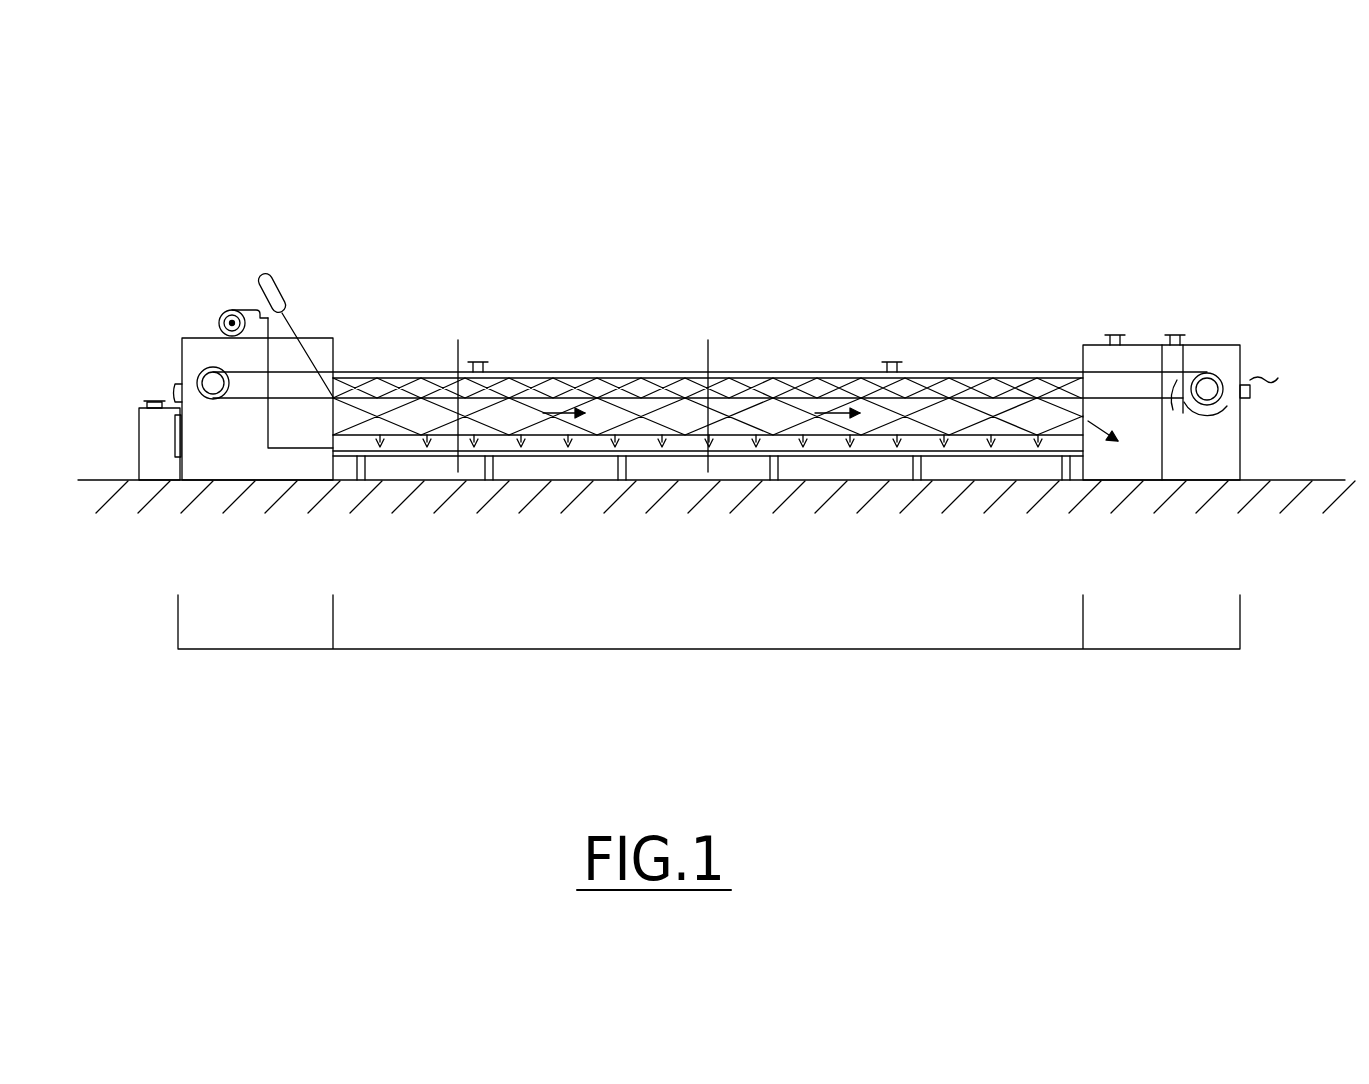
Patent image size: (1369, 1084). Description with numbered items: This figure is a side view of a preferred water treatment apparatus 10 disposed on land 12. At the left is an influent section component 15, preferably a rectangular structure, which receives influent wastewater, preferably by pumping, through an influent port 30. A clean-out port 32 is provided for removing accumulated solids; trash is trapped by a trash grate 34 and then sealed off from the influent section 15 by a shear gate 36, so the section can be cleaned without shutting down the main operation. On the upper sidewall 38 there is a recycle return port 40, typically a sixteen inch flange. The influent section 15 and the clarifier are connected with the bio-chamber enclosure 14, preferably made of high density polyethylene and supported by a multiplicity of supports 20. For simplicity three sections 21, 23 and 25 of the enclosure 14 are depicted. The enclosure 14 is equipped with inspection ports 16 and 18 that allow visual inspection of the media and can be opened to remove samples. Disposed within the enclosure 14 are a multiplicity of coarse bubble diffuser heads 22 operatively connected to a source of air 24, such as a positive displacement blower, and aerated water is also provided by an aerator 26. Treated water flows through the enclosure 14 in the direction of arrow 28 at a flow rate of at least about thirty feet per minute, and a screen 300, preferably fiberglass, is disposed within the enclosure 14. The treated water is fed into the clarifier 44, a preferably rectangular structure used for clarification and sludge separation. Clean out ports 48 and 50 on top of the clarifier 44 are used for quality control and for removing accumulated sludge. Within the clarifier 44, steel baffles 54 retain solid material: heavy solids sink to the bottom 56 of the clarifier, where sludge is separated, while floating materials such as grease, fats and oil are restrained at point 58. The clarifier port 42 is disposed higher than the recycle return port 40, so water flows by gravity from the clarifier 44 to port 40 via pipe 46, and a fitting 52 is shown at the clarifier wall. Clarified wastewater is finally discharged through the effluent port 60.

The water treatment apparatus 10 is at (703, 265).
The land 12 is at (233, 503).
The enclosure 14 is at (435, 410).
The influent section component 15 is at (295, 650).
The inspection port 16 is at (478, 360).
The inspection port 18 is at (890, 364).
The support legs 20 is at (382, 480).
The section 21 is at (388, 412).
The coarse bubble diffuser heads 22 is at (522, 440).
The section 23 is at (608, 410).
The source of air 24 is at (231, 308).
The section 25 is at (946, 426).
The aerator 26 is at (279, 283).
The arrow 28 is at (808, 420).
The influent port 30 is at (173, 385).
The clean-out port 32 is at (152, 401).
The trash grate 34 is at (267, 340).
The shear gate 36 is at (175, 432).
The upper sidewall 38 is at (217, 350).
The recycle return port 40 is at (203, 367).
The clarifier port 42 is at (1217, 374).
The clarifier 44 is at (1165, 650).
The pipe 46 is at (285, 387).
The clean out port 48 is at (1118, 334).
The clean out port 50 is at (1178, 333).
The outlet 52 is at (1257, 380).
The steel baffles 54 is at (1163, 423).
The bottom of the clarifier 56 is at (1098, 483).
The point 58 is at (1170, 378).
The effluent port 60 is at (1250, 397).
The screen 300 is at (410, 437).